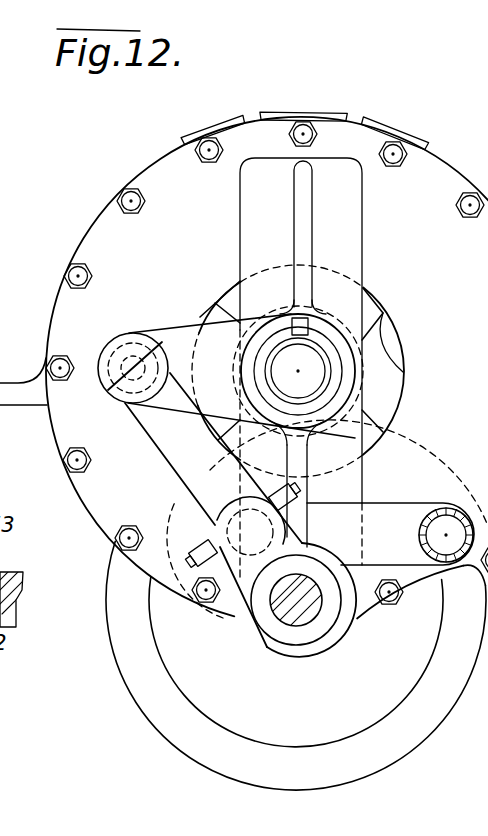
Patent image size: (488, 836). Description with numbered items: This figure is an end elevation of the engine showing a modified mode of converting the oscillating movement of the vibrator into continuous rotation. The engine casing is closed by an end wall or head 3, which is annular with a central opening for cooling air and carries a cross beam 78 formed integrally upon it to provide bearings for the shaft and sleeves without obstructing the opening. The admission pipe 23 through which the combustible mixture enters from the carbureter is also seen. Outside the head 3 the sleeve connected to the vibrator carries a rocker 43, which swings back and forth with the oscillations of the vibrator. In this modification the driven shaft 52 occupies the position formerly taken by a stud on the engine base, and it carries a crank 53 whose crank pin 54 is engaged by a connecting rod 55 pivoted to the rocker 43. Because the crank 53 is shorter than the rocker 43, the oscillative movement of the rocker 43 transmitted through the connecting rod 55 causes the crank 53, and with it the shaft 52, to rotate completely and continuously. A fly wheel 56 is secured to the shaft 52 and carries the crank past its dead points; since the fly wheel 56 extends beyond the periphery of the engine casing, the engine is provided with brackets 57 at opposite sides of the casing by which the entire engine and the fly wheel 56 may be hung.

The end wall or head 3 is at (437, 185).
The rocker 43 is at (181, 333).
The connecting rod 55 is at (172, 444).
The bracket 57 is at (22, 398).
The cross beam 78 is at (352, 446).
The admission pipe 23 is at (446, 510).
The crank 53 is at (197, 548).
The crank pin 54 is at (180, 603).
The driven shaft 52 is at (287, 615).
The fly wheel 56 is at (140, 676).